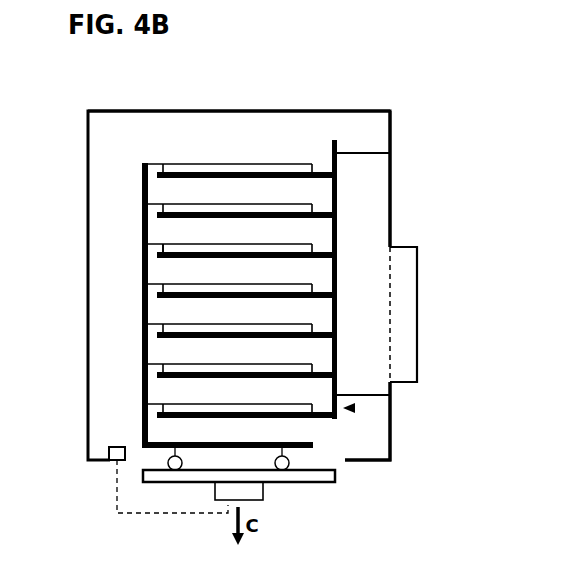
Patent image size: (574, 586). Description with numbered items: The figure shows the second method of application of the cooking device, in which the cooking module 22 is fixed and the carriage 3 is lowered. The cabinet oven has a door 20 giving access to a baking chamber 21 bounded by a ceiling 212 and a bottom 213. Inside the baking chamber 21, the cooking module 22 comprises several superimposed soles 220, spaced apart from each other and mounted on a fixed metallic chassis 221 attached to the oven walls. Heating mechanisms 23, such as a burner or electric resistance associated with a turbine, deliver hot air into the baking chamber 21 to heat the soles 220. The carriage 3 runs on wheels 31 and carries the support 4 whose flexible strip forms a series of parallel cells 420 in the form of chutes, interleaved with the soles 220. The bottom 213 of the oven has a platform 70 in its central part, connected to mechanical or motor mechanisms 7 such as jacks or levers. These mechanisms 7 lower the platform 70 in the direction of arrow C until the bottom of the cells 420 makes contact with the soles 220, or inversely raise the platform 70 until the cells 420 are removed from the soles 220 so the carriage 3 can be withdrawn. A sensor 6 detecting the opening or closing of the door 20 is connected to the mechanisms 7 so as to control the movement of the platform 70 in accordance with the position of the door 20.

The carriage 3 is at (142, 339).
The support 4 is at (212, 168).
The sensor 6 is at (117, 447).
The mechanical or motor mechanisms 7 is at (250, 488).
The door 20 is at (88, 171).
The baking chamber 21 is at (249, 129).
The cooking module 22 is at (350, 408).
The heating mechanisms 23 is at (403, 316).
The wheels 31 is at (283, 466).
The platform 70 is at (322, 480).
The ceiling 212 is at (363, 110).
The bottom 213 is at (360, 461).
The soles 220 is at (318, 228).
The chassis 221 is at (362, 155).
The cells 420 is at (178, 250).